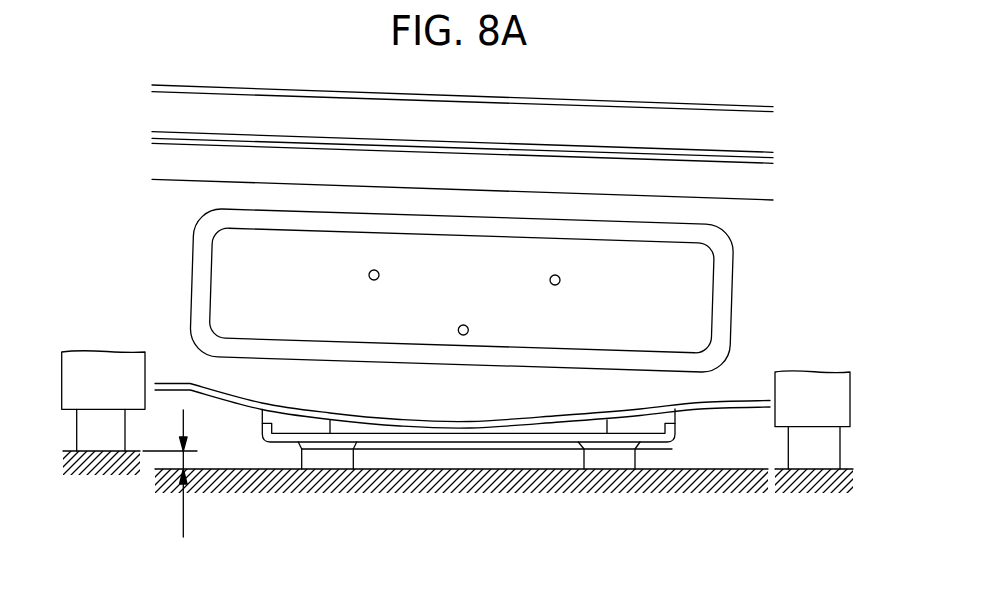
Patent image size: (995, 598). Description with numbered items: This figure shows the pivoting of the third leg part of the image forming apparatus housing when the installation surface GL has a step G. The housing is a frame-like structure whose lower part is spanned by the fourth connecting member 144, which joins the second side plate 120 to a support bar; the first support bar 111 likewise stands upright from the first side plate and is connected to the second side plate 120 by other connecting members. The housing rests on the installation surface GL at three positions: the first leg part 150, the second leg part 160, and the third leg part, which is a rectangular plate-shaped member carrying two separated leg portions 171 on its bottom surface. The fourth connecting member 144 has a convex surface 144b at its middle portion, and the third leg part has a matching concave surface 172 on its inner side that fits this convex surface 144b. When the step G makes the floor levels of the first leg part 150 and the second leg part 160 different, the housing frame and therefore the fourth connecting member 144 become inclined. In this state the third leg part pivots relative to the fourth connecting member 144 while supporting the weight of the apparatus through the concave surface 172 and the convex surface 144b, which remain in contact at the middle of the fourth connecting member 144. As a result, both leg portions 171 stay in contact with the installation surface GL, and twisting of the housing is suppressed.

The fourth connecting member 144 is at (178, 242).
The convex surface 144b is at (471, 411).
The concave surface 172 is at (545, 437).
The leg portions 171 is at (323, 455).
The second side plate 120 is at (88, 377).
The second leg part 160 is at (112, 437).
The first support bar 111 is at (792, 393).
The first leg part 150 is at (807, 445).
The installation surface GL is at (232, 452).
The step G is at (170, 473).